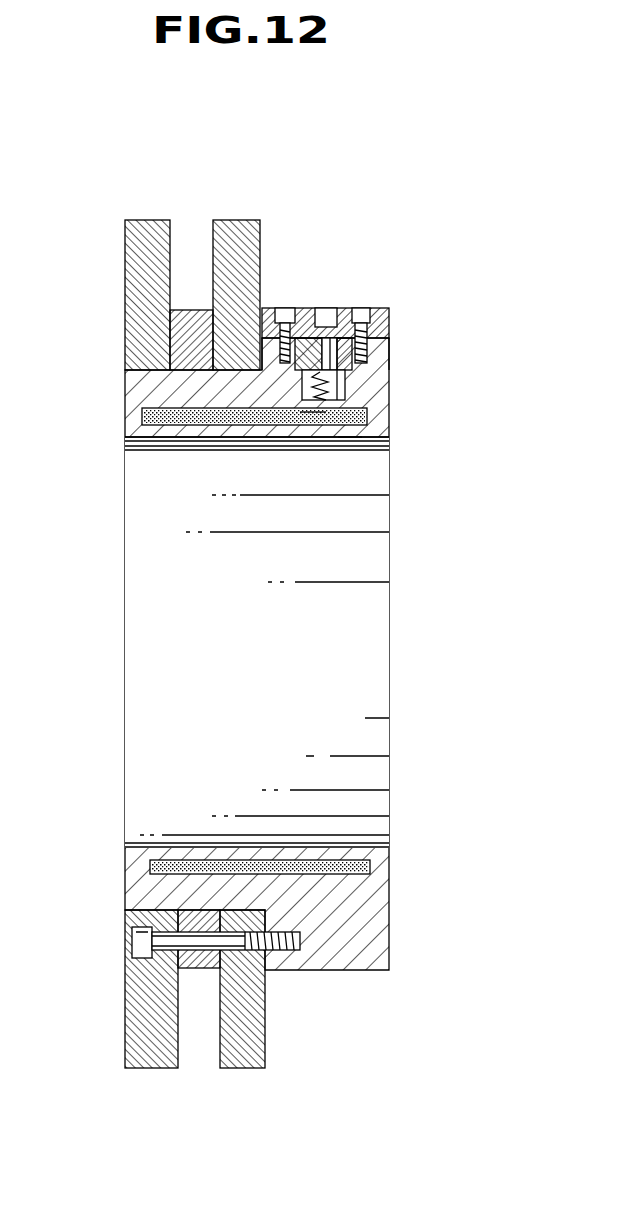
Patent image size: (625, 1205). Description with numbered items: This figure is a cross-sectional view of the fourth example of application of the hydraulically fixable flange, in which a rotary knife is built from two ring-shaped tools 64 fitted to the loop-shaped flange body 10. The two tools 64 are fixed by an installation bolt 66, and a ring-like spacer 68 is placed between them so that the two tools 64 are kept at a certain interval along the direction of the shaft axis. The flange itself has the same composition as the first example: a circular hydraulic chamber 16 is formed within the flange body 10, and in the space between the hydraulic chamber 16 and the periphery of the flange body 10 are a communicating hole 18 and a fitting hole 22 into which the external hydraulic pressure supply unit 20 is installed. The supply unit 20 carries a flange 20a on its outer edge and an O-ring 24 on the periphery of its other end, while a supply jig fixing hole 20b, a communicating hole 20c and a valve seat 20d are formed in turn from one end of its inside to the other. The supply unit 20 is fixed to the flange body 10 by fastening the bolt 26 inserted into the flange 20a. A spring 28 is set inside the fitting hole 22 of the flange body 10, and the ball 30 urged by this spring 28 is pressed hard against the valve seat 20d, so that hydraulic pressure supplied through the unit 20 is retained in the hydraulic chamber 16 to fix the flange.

The flange body 10 is at (131, 398).
The hydraulic chamber 16 is at (343, 440).
The communicating hole 18 is at (362, 410).
The external hydraulic pressure supply unit 20 is at (374, 293).
The flange 20a is at (390, 320).
The supply jig fixing hole 20b is at (322, 307).
The communicating hole 20c is at (347, 307).
The valve seat 20d is at (362, 364).
The fitting hole 22 is at (335, 427).
The O-ring 24 is at (303, 402).
The bolt 26 is at (287, 315).
The spring 28 is at (350, 440).
The ball 30 is at (320, 412).
The ring-shaped tool 64 is at (237, 221).
The installation bolt 66 is at (139, 942).
The spacer 68 is at (167, 320).